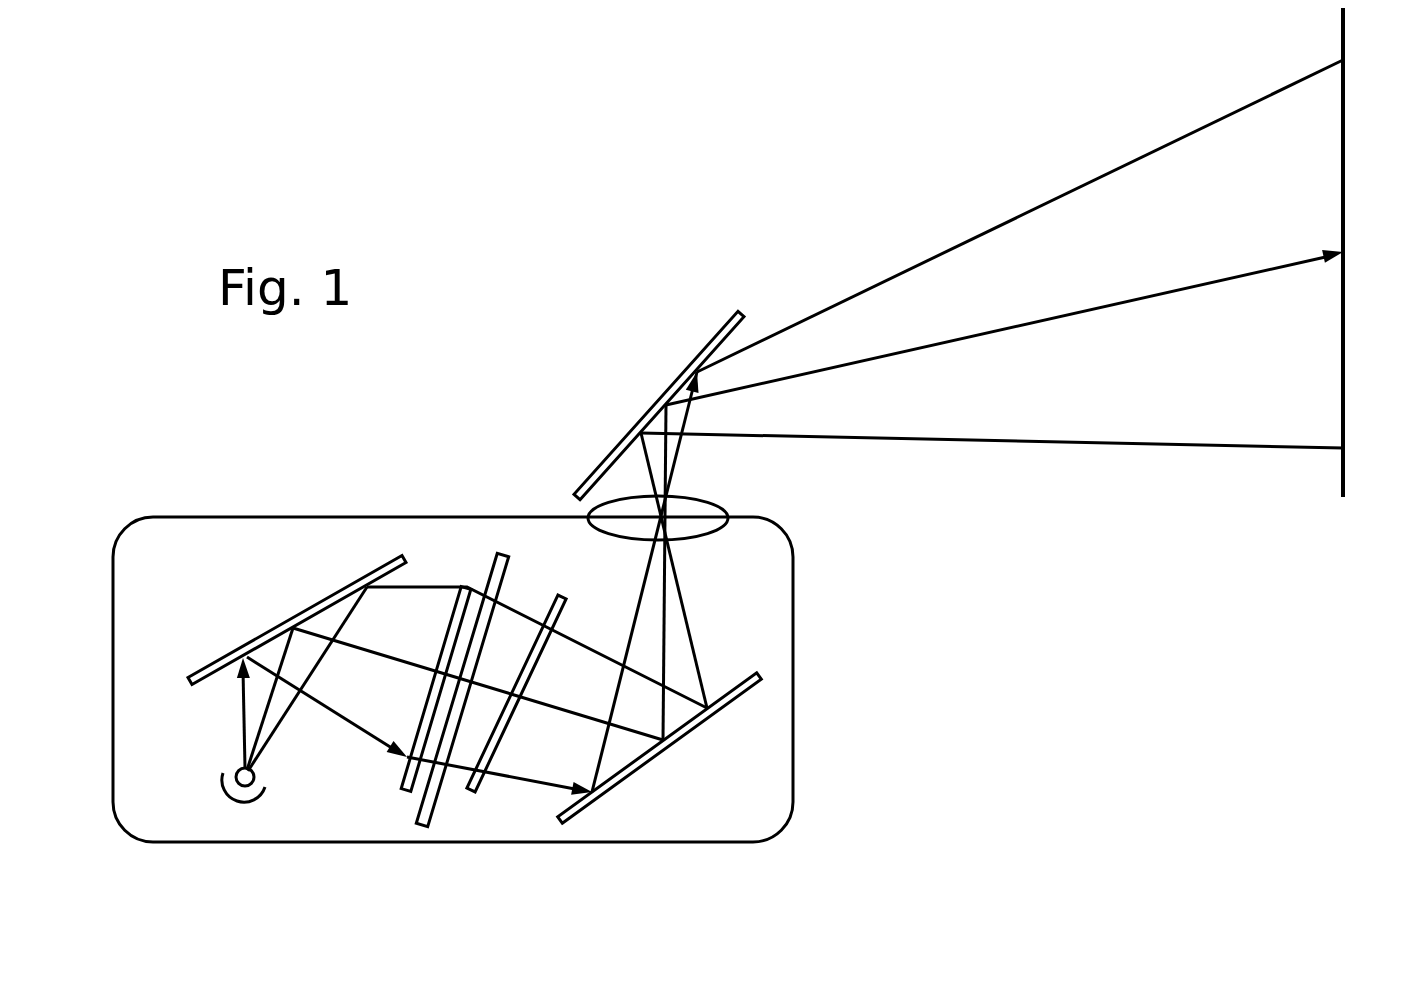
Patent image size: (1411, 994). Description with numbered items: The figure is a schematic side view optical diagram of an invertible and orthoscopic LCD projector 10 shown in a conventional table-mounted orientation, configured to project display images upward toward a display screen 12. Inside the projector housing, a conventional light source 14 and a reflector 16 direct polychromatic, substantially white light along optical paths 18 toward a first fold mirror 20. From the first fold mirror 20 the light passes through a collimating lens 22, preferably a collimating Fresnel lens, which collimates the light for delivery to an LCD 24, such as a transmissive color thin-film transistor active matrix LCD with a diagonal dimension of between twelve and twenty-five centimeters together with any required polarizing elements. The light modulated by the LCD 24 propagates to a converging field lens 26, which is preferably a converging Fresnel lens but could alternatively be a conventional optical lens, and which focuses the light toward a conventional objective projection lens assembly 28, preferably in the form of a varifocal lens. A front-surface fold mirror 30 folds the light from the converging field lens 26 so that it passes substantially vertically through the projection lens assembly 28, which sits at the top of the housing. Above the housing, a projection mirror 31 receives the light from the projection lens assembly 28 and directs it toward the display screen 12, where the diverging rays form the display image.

The LCD projector 10 is at (262, 473).
The display screen 12 is at (1345, 330).
The light source 14 is at (240, 768).
The reflector 16 is at (262, 792).
The optical paths 18 is at (298, 735).
The first fold mirror 20 is at (316, 601).
The collimating lens 22 is at (415, 730).
The LCD 24 is at (448, 764).
The converging field lens 26 is at (562, 606).
The projection lens assembly 28 is at (703, 493).
The front-surface fold mirror 30 is at (693, 727).
The projection mirror 31 is at (670, 380).